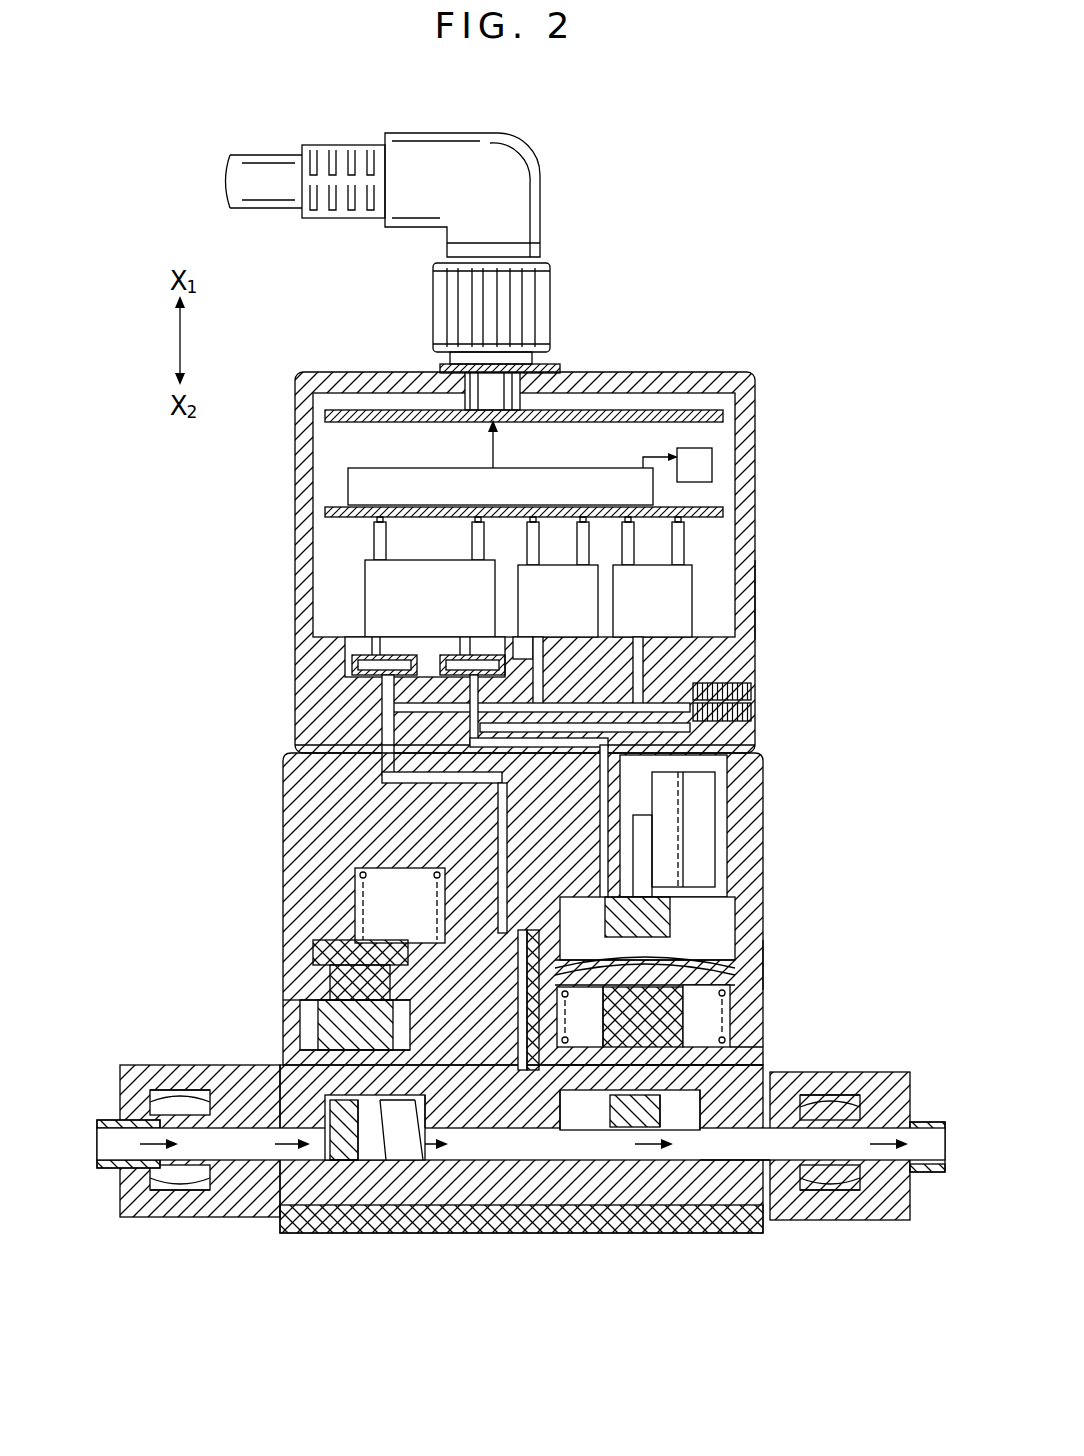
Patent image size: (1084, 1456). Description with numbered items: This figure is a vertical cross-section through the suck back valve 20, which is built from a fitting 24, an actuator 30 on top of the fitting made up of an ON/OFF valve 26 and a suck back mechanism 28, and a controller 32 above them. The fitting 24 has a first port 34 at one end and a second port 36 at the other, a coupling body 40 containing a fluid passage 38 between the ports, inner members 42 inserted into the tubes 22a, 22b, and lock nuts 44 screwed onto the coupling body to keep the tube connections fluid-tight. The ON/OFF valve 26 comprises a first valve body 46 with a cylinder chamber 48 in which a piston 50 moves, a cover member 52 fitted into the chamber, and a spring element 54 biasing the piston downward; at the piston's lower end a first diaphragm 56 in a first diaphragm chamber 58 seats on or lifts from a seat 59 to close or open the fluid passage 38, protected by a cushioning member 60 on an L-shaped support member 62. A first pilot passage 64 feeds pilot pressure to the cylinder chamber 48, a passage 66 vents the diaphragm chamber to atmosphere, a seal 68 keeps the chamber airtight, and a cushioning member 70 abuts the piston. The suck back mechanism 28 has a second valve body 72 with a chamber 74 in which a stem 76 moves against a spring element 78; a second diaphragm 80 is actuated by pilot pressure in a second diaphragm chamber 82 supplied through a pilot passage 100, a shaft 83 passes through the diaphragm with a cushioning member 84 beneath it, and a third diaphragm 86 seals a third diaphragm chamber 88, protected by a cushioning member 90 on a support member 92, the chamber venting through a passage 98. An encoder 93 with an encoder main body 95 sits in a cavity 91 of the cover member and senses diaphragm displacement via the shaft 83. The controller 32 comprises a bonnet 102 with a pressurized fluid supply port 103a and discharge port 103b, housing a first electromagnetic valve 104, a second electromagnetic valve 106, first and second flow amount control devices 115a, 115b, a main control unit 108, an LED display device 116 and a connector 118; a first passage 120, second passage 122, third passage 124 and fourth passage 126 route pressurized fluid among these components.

The suck back valve 20 is at (690, 240).
The tube 22a is at (120, 1170).
The tube 22b is at (920, 1175).
The fitting 24 is at (570, 1242).
The ON/OFF valve 26 is at (332, 908).
The suck back mechanism 28 is at (772, 865).
The actuator 30 is at (768, 963).
The controller 32 is at (762, 608).
The first port 34 is at (255, 1215).
The second port 36 is at (810, 1215).
The fluid passage 38 is at (540, 1170).
The coupling body 40 is at (745, 1233).
The inner member 42 is at (215, 1200).
The lock nut 44 is at (175, 1200).
The first valve body 46 is at (300, 1000).
The cylinder chamber 48 is at (310, 965).
The piston 50 is at (335, 935).
The cover member 52 is at (283, 768).
The spring element 54 is at (366, 878).
The first diaphragm 56 is at (430, 1150).
The first diaphragm chamber 58 is at (338, 1160).
The seat 59 is at (400, 1160).
The cushioning member 60 is at (350, 1150).
The support member 62 is at (448, 1130).
The first pilot passage 64 is at (300, 830).
The passage 66 is at (310, 1055).
The seal 68 is at (330, 1010).
The cushioning member 70 is at (320, 985).
The second valve body 72 is at (745, 1055).
The chamber 74 is at (740, 1038).
The stem 76 is at (610, 1014).
The spring element 78 is at (735, 1018).
The second diaphragm 80 is at (735, 990).
The second diaphragm chamber 82 is at (740, 945).
The shaft 83 is at (650, 897).
The cushioning member 84 is at (585, 935).
The third diaphragm 86 is at (665, 1130).
The third diaphragm chamber 88 is at (640, 1140).
The cushioning member 90 is at (700, 1110).
The cavity 91 is at (725, 763).
The support member 92 is at (610, 1160).
The encoder 93 is at (706, 830).
The encoder main body 95 is at (712, 805).
The passage 98 is at (700, 1070).
The pilot passage 100 is at (300, 800).
The bonnet 102 is at (295, 493).
The pressurized fluid supply port 103a is at (752, 712).
The pressurized fluid discharge port 103b is at (752, 692).
The first electromagnetic valve 104 is at (675, 597).
The second electromagnetic valve 106 is at (528, 592).
The main control unit 108 is at (540, 468).
The first flow amount control device 115a is at (352, 645).
The second flow amount control device 115b is at (473, 645).
The LED display device 116 is at (712, 465).
The connector 118 is at (540, 318).
The first passage 120 is at (740, 660).
The second passage 122 is at (300, 703).
The third passage 124 is at (300, 742).
The fourth passage 126 is at (745, 600).